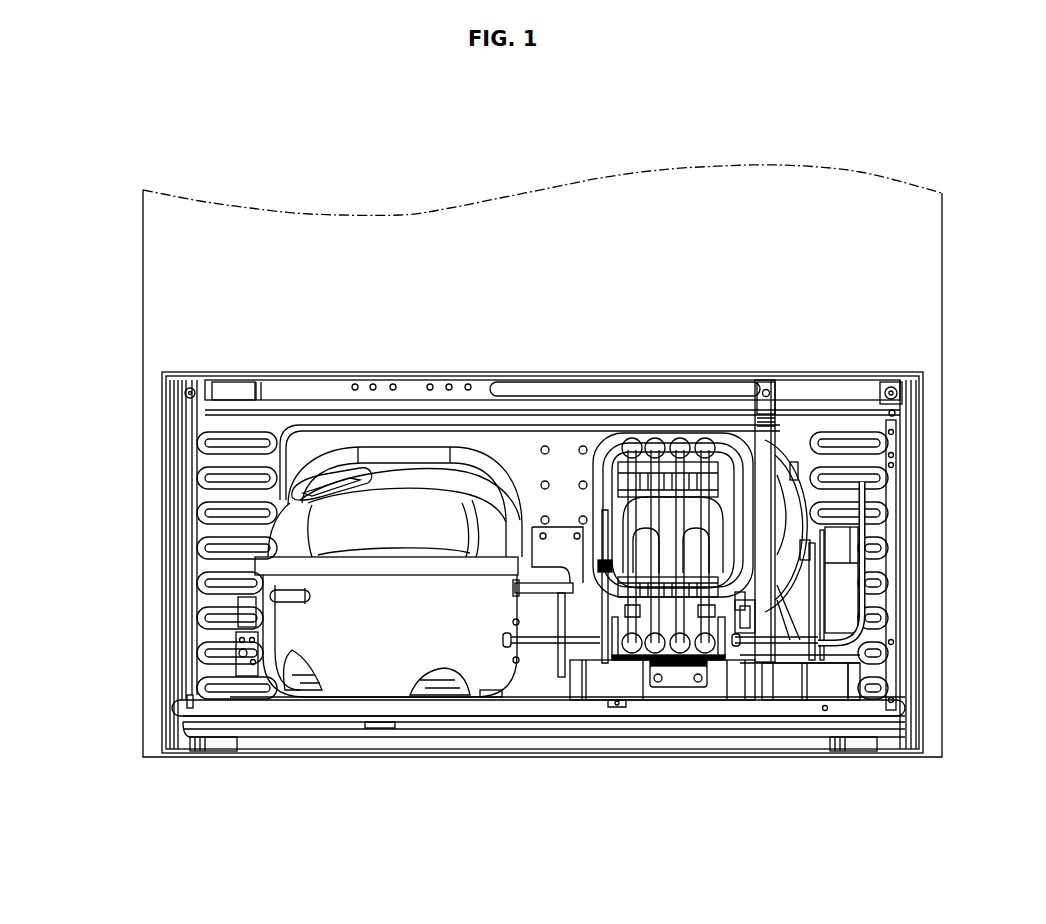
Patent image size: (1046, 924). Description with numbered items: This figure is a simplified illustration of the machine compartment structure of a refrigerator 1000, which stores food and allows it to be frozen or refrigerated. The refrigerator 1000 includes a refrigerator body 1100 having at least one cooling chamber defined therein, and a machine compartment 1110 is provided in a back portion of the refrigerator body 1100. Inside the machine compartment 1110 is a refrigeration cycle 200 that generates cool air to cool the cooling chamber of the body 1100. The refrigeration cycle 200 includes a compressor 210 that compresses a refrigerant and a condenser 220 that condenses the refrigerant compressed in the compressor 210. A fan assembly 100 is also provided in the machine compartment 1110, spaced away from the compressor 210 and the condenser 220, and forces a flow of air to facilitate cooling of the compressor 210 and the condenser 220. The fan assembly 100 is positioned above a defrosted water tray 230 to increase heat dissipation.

The refrigerator 1000 is at (212, 101).
The refrigerator body 1100 is at (175, 297).
The machine compartment 1110 is at (163, 401).
The fan assembly 100 is at (770, 510).
The refrigeration cycle 200 is at (625, 826).
The compressor 210 is at (366, 680).
The condenser 220 is at (643, 700).
The defrosted water tray 230 is at (815, 700).